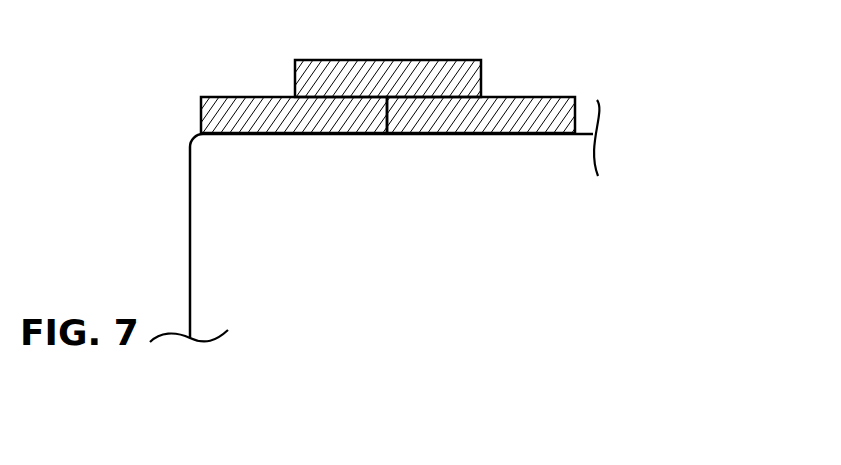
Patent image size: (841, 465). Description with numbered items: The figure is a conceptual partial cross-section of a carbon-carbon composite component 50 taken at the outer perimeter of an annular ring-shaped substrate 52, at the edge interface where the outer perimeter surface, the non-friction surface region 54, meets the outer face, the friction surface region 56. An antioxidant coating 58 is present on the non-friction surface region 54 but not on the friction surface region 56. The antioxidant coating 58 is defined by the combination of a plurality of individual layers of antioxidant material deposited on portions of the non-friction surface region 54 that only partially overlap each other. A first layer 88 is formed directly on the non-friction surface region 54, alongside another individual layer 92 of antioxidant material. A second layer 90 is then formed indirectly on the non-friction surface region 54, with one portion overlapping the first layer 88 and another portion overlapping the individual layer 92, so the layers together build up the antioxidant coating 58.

The carbon-carbon composite component 50 is at (662, 62).
The substrate 52 is at (364, 194).
The non-friction surface region 54 is at (401, 151).
The friction surface region 56 is at (174, 282).
The antioxidant coating 58 is at (172, 89).
The first layer 88 is at (253, 96).
The second layer 90 is at (397, 59).
The individual layer of antioxidant material 92 is at (515, 96).